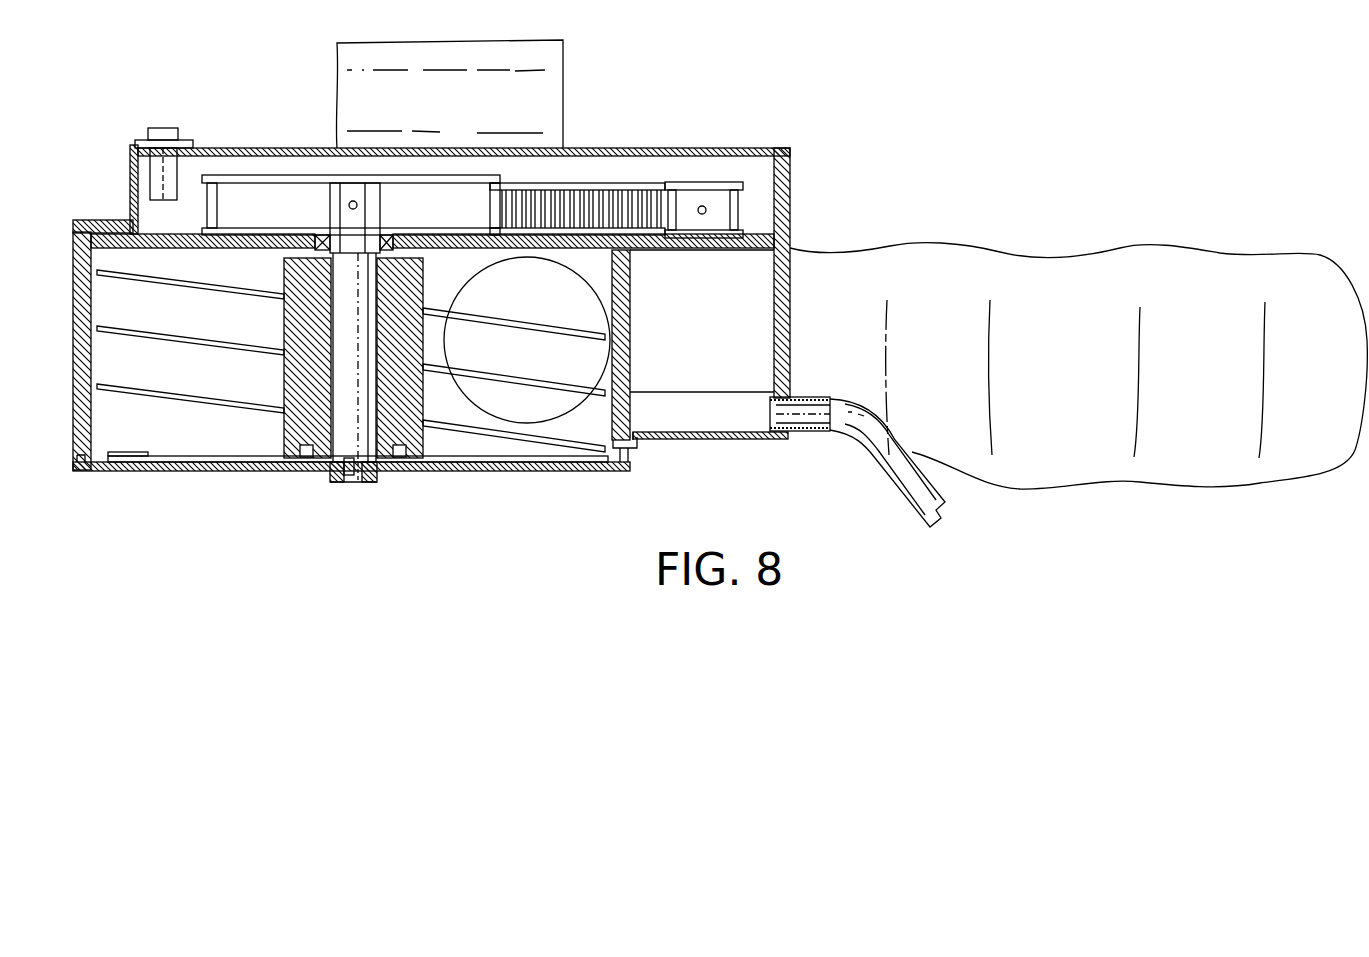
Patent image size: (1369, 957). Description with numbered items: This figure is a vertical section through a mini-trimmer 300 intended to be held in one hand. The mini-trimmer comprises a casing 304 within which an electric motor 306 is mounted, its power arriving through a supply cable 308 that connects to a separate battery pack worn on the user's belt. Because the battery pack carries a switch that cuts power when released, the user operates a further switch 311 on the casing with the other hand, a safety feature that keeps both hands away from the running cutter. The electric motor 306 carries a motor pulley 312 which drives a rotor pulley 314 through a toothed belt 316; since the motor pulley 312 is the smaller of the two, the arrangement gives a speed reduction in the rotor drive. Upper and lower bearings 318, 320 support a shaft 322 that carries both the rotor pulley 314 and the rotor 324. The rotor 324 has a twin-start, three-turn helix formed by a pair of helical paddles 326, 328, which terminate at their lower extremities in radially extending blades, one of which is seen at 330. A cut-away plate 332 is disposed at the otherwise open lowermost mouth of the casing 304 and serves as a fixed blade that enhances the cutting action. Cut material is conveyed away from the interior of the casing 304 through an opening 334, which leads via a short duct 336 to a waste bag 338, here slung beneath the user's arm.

The mini-trimmer 300 is at (831, 149).
The casing 304 is at (779, 150).
The electric motor 306 is at (752, 345).
The supply cable 308 is at (912, 492).
The switch 311 is at (164, 128).
The motor pulley 312 is at (690, 213).
The rotor pulley 314 is at (455, 203).
The toothed belt 316 is at (611, 193).
The upper bearing 318 is at (318, 238).
The lower bearing 320 is at (334, 482).
The shaft 322 is at (362, 483).
The rotor 324 is at (292, 435).
The helical paddle 326 is at (176, 400).
The helical paddle 328 is at (528, 428).
The radially extending blade 330 is at (112, 455).
The cut-away plate 332 is at (109, 466).
The opening 334 is at (631, 311).
The duct 336 is at (695, 440).
The waste bag 338 is at (1068, 372).